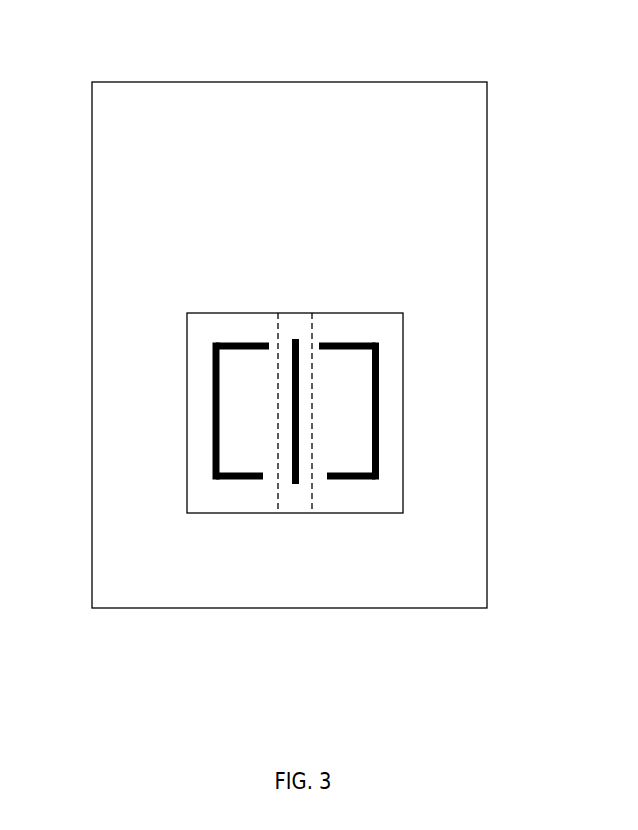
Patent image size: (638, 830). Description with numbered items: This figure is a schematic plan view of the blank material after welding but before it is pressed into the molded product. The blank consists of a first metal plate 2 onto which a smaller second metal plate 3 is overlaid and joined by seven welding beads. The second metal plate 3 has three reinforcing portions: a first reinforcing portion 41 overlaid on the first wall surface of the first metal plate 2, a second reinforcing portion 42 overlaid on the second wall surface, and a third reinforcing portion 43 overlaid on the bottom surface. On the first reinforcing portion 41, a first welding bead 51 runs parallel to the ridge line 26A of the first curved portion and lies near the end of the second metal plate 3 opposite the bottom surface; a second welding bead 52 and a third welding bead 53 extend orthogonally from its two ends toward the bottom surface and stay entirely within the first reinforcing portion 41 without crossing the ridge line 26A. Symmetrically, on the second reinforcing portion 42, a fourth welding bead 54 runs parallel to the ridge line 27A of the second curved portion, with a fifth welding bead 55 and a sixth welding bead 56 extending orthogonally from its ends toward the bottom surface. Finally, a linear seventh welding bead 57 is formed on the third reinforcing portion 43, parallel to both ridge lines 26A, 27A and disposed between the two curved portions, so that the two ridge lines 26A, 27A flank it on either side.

The first metal plate 2 is at (462, 183).
The second metal plate 3 is at (197, 383).
The first reinforcing portion 41 is at (149, 374).
The second reinforcing portion 42 is at (439, 373).
The third reinforcing portion 43 is at (299, 465).
The first welding bead 51 is at (213, 437).
The second welding bead 52 is at (257, 342).
The third welding bead 53 is at (233, 480).
The fourth welding bead 54 is at (379, 408).
The fifth welding bead 55 is at (336, 343).
The sixth welding bead 56 is at (357, 480).
The seventh welding bead 57 is at (291, 462).
The ridge line of the first curved portion 26A is at (277, 488).
The ridge line of the second curved portion 27A is at (313, 488).